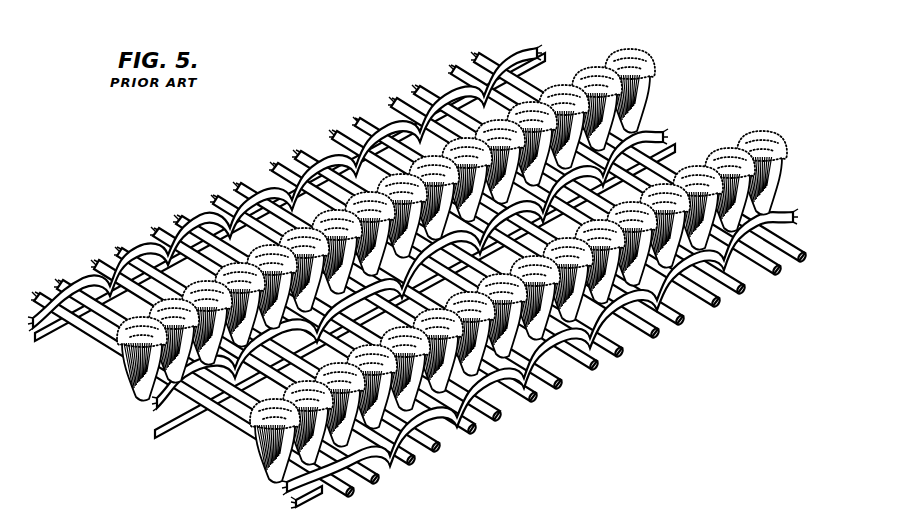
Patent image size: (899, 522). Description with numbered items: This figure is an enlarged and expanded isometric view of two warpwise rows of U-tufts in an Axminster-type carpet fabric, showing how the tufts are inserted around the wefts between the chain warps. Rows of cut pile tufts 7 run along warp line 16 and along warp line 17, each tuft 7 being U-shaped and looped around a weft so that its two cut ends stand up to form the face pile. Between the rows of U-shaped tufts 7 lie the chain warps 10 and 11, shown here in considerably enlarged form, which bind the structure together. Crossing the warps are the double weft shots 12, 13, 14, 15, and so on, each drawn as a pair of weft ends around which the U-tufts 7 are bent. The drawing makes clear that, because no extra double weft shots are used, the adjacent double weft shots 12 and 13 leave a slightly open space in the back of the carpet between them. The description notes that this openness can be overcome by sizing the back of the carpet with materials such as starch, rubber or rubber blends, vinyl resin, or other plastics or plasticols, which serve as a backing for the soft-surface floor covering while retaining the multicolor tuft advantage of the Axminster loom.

The U-shaped tufts 7 is at (648, 70).
The chain warp 10 is at (299, 506).
The chain warp 11 is at (284, 488).
The double weft shot 12 is at (375, 483).
The double weft shot 13 is at (434, 452).
The double weft shot 14 is at (490, 422).
The double weft shot 15 is at (548, 392).
The warp line 16 is at (550, 70).
The warp line 17 is at (674, 150).